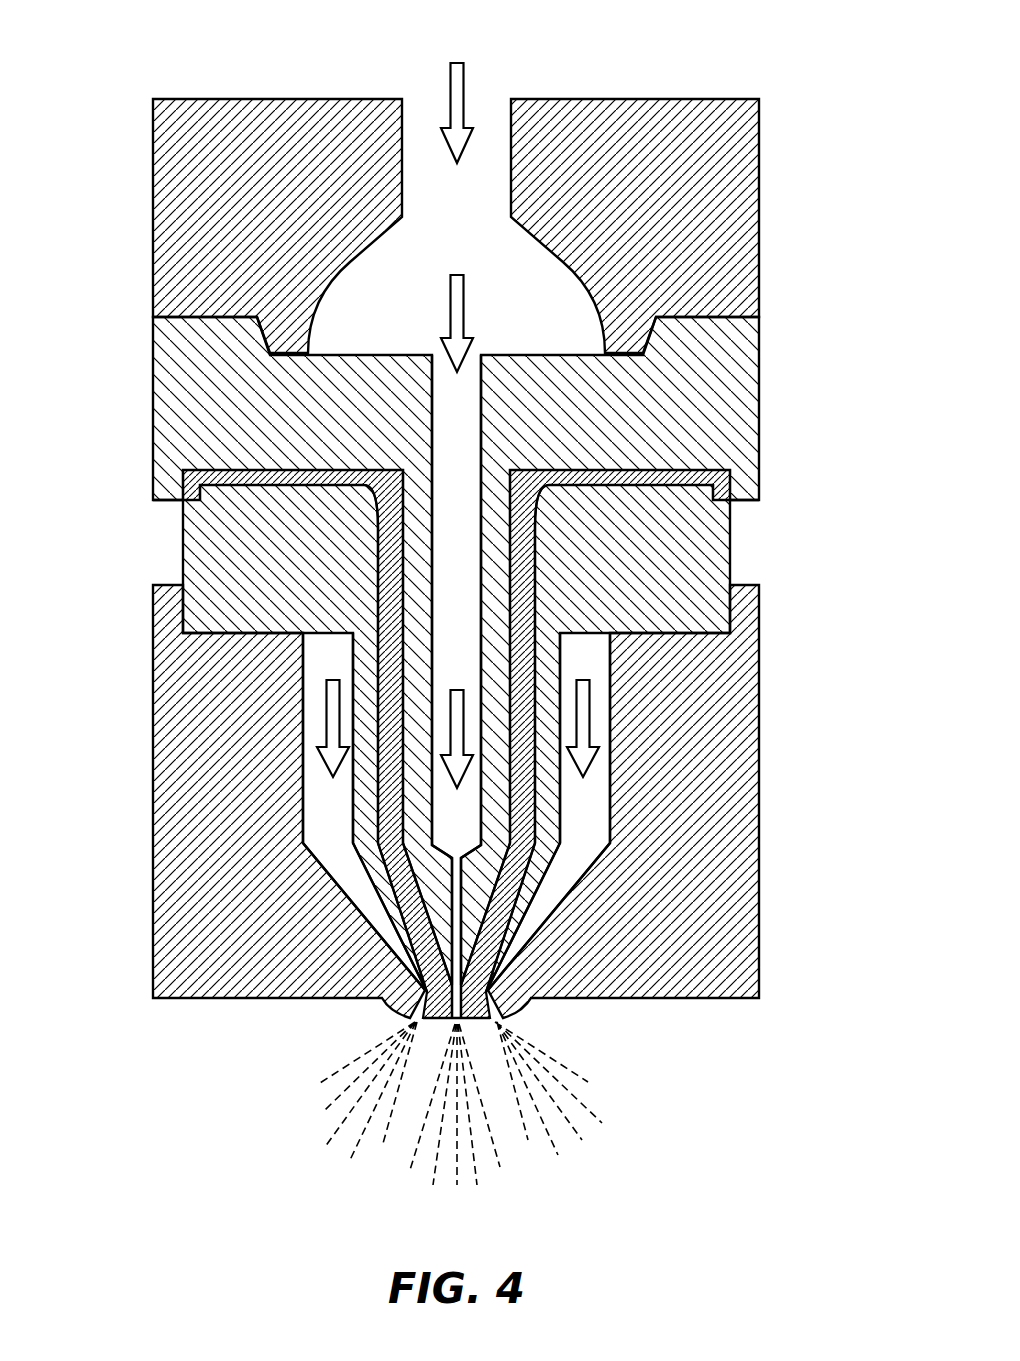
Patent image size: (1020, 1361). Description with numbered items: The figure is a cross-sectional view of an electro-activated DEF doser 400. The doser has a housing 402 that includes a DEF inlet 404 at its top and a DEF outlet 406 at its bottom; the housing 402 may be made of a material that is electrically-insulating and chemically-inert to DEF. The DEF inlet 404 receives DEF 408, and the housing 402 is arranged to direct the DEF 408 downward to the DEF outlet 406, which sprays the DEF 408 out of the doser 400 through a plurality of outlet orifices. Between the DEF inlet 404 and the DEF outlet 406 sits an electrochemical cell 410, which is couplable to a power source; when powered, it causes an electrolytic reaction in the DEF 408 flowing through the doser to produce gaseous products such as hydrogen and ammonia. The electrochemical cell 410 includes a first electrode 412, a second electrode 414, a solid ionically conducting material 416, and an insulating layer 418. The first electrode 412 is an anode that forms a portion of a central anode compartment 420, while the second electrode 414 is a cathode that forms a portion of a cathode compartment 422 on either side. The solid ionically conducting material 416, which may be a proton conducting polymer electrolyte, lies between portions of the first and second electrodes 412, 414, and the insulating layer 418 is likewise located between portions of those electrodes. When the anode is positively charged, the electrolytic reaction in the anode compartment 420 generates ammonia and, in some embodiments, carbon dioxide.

The electro-activated DEF doser 400 is at (797, 48).
The housing 402 is at (760, 208).
The DEF inlet 404 is at (424, 92).
The DEF outlet 406 is at (480, 1034).
The DEF 408 is at (464, 84).
The electrochemical cell 410 is at (80, 398).
The first electrode 412 is at (153, 409).
The second electrode 414 is at (183, 568).
The solid ionically conducting material 416 is at (372, 490).
The insulating layer 418 is at (188, 492).
The anode compartment 420 is at (478, 837).
The cathode compartment 422 is at (348, 837).